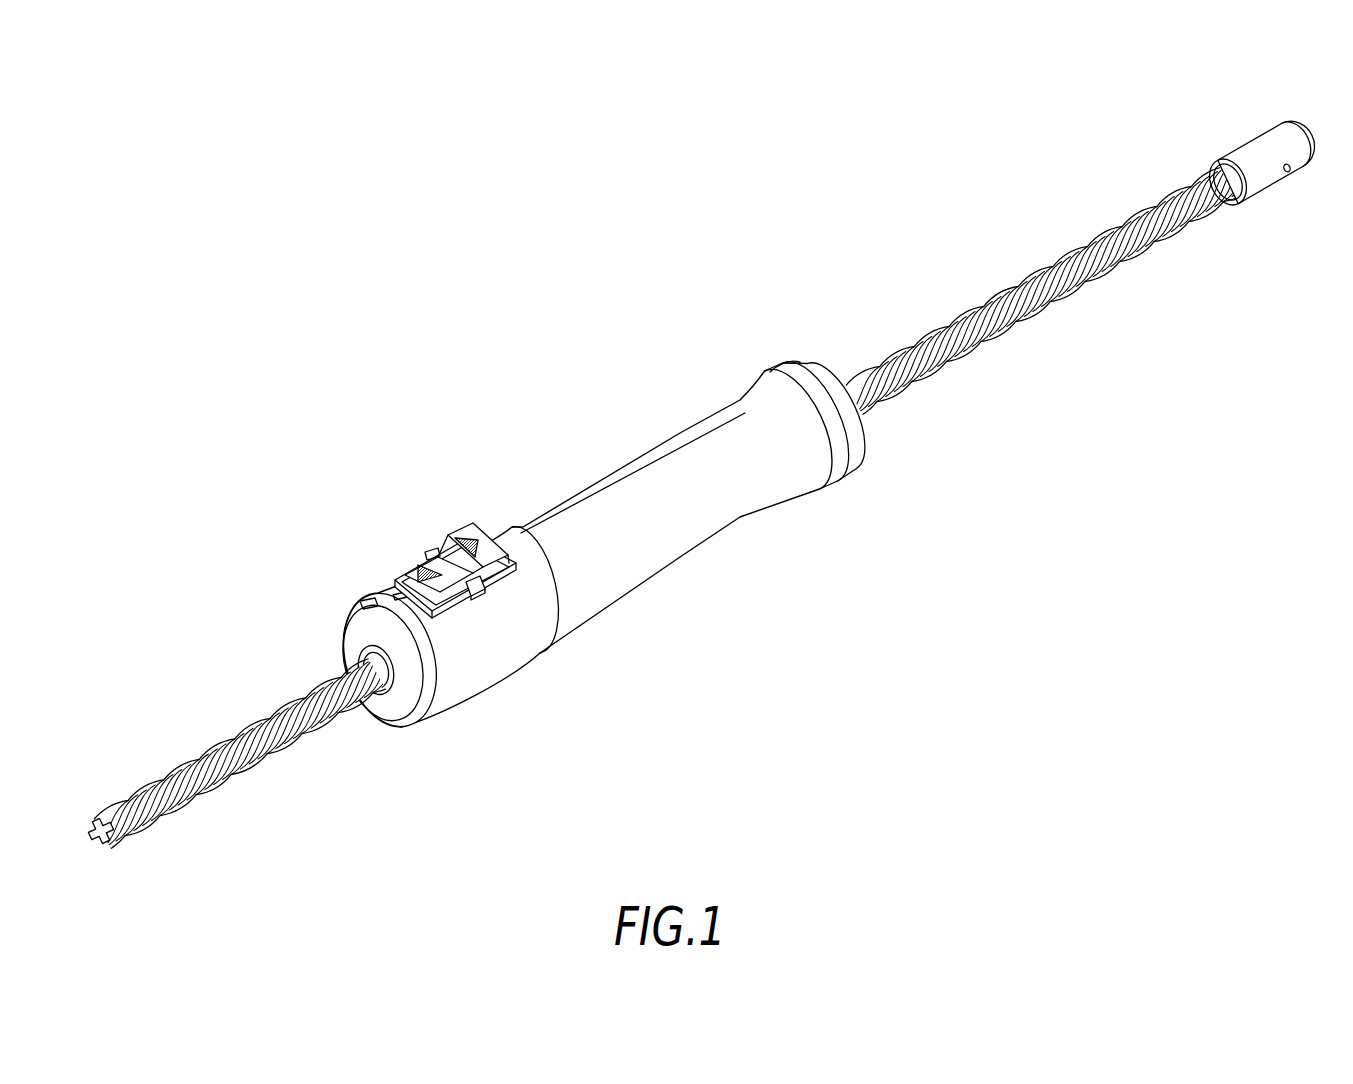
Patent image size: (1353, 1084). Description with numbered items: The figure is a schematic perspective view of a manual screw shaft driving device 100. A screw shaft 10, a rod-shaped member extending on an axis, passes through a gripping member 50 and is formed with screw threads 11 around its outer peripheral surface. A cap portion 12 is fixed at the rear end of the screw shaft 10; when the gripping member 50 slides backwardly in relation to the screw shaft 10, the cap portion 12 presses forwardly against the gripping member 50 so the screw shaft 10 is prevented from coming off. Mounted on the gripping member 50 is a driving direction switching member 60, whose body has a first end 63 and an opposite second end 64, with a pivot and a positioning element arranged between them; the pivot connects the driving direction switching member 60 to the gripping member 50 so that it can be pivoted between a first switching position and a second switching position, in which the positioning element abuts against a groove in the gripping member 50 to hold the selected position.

The manual screw shaft driving device 100 is at (195, 178).
The screw shaft 10 is at (684, 462).
The screw threads 11 is at (176, 770).
The cap portion 12 is at (1253, 144).
The gripping member 50 is at (626, 424).
The driving direction switching member 60 is at (448, 509).
The first end 63 is at (411, 562).
The second end 64 is at (466, 523).